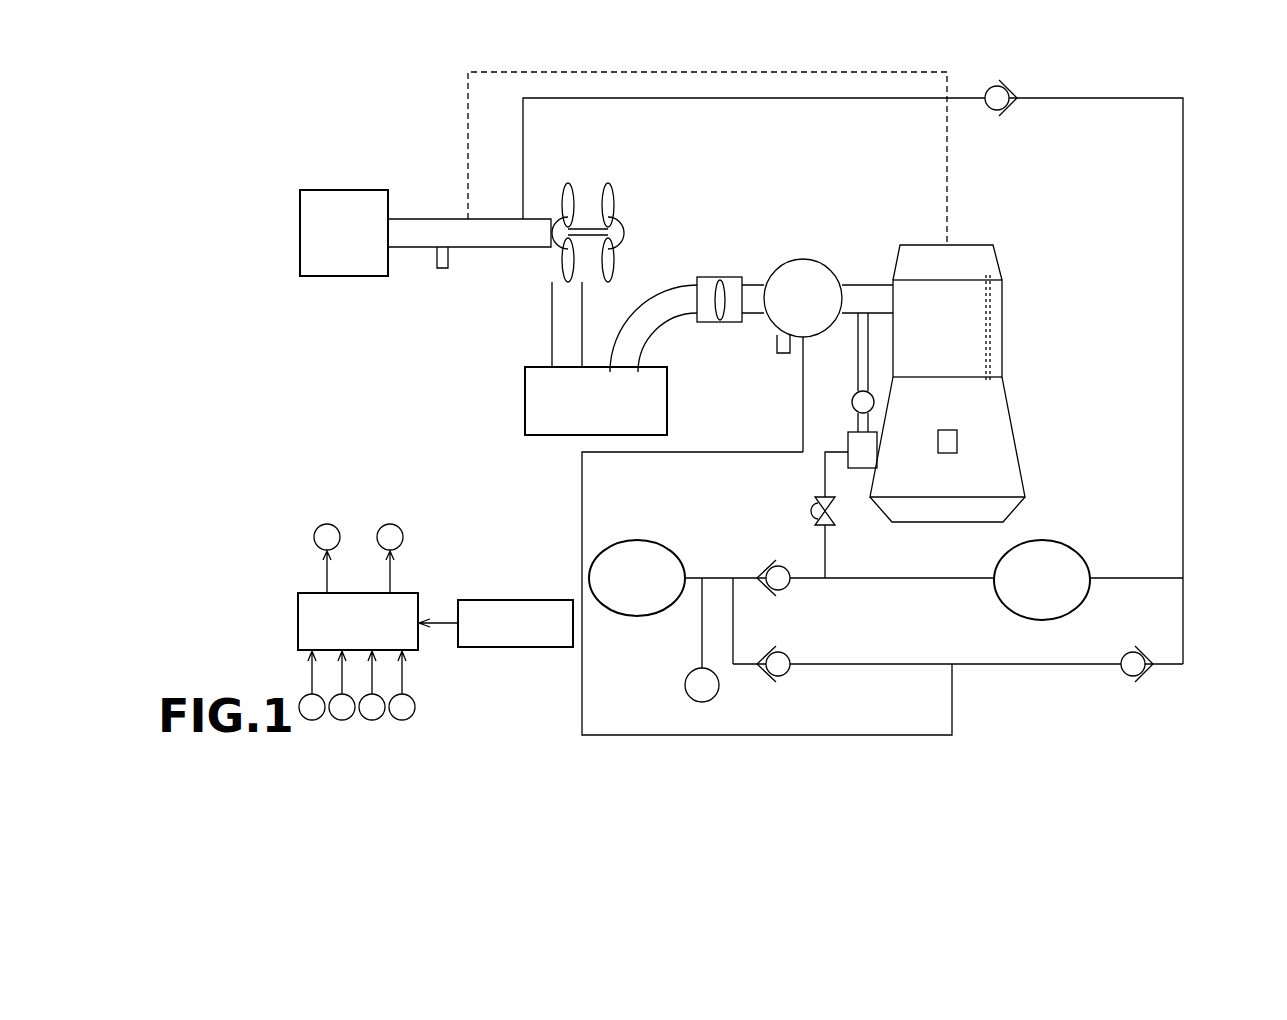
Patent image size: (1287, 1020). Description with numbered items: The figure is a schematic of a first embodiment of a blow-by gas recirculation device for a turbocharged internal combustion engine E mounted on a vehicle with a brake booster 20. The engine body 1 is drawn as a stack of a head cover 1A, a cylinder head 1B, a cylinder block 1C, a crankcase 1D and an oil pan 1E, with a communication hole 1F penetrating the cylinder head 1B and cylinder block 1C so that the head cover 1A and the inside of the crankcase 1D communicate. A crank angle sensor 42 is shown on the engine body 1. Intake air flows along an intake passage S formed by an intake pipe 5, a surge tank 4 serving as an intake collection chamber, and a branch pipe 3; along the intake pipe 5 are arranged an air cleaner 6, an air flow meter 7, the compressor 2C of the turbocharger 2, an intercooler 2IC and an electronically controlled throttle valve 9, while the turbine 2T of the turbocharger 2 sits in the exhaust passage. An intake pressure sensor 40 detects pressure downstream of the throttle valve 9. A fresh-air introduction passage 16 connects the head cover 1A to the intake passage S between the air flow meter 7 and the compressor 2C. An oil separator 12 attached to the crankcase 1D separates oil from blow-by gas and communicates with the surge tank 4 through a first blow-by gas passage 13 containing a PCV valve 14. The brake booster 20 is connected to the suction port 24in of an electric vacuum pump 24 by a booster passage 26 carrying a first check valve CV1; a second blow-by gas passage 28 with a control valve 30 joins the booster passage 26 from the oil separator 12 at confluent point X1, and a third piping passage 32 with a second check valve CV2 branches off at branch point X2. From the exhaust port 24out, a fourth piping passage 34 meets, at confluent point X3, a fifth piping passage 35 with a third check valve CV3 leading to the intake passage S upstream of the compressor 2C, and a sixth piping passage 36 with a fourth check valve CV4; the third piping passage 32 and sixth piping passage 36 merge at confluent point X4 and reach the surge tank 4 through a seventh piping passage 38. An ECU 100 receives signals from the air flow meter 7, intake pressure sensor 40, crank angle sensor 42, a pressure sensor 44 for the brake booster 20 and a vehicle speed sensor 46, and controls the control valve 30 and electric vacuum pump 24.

The engine body 1 is at (992, 389).
The head cover 1A is at (1005, 262).
The cylinder head 1B is at (1005, 300).
The cylinder block 1C is at (1005, 355).
The crankcase 1D is at (1020, 470).
The oil pan 1E is at (974, 515).
The communication hole 1F is at (992, 330).
The turbocharger 2 is at (625, 200).
The compressor 2C is at (565, 183).
The turbine 2T is at (607, 183).
The intercooler 2IC is at (525, 400).
The branch pipe 3 is at (866, 285).
The surge tank 4 is at (802, 259).
The intake pipe 5 is at (755, 285).
The air cleaner 6 is at (345, 190).
The air flow meter 7 is at (442, 270).
The throttle valve 9 is at (708, 277).
The oil separator 12 is at (858, 468).
The first blow-by gas passage 13 is at (857, 370).
The PCV valve 14 is at (852, 403).
The fresh-air introduction passage 16 is at (480, 72).
The brake booster 20 is at (635, 540).
The electric vacuum pump 24 is at (1068, 545).
The suction port 24in is at (992, 583).
The exhaust port 24out is at (1092, 583).
The booster passage 26 is at (880, 583).
The second blow-by gas passage 28 is at (822, 478).
The control valve 30 is at (810, 510).
The third piping passage 32 is at (728, 668).
The fourth piping passage 34 is at (1155, 578).
The fifth piping passage 35 is at (1183, 290).
The sixth piping passage 36 is at (1065, 668).
The seventh piping passage 38 is at (582, 705).
The intake pressure sensor 40 is at (783, 354).
The crank angle sensor 42 is at (957, 440).
The pressure sensor 44 is at (685, 683).
The vehicle speed sensor 46 is at (504, 600).
The ECU 100 is at (355, 593).
The intake passage S is at (493, 252).
The internal combustion engine E is at (995, 203).
The confluent point X1 is at (828, 578).
The branch point X2 is at (735, 590).
The confluent point X3 is at (1183, 578).
The confluent point X4 is at (952, 668).
The first check valve CV1 is at (790, 588).
The second check valve CV2 is at (790, 674).
The third check valve CV3 is at (997, 114).
The fourth check valve CV4 is at (1133, 679).